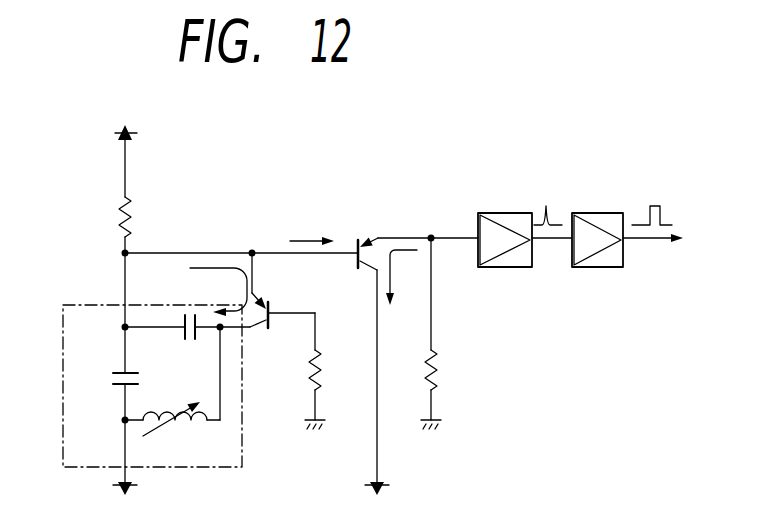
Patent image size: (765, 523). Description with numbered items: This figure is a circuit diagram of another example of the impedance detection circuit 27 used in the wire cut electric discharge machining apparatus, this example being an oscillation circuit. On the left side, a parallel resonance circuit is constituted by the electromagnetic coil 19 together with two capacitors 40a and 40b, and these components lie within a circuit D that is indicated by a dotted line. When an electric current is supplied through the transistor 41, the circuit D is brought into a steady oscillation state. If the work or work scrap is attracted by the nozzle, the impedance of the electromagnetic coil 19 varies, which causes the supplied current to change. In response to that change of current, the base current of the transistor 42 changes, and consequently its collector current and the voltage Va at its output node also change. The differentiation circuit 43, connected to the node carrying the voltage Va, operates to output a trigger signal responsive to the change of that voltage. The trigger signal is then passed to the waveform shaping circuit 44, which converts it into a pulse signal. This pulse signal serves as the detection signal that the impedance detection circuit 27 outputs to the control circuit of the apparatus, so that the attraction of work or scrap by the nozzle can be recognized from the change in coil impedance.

The impedance detection circuit 27 is at (332, 179).
The circuit D is at (64, 304).
The capacitor 40a is at (113, 388).
The capacitor 40b is at (188, 342).
The electromagnetic coil 19 is at (190, 433).
The transistor 41 is at (269, 300).
The transistor 42 is at (372, 233).
The differentiation circuit 43 is at (506, 268).
The waveform shaping circuit 44 is at (600, 268).